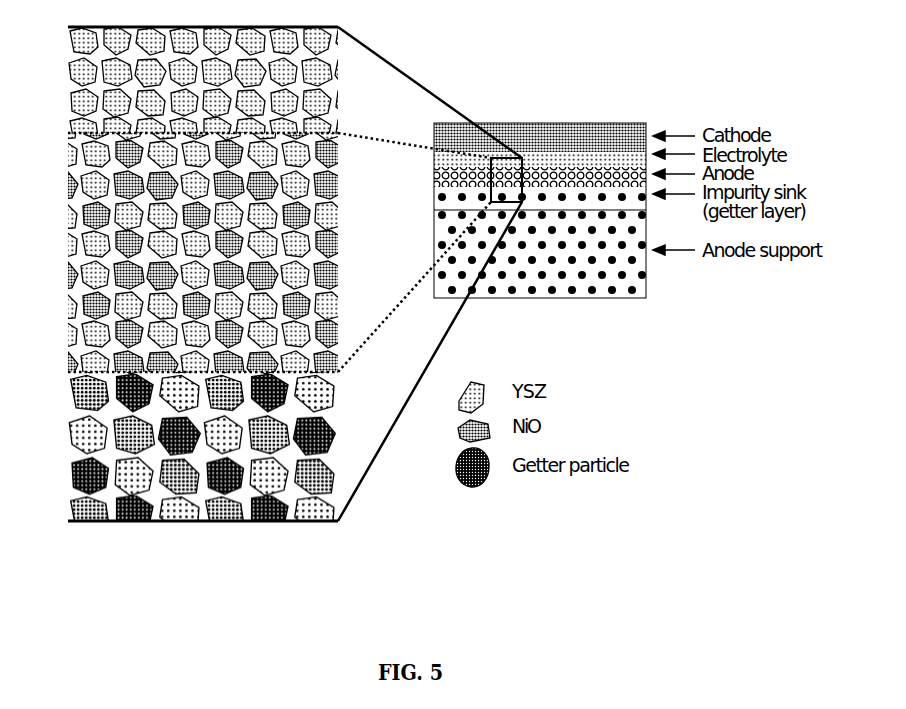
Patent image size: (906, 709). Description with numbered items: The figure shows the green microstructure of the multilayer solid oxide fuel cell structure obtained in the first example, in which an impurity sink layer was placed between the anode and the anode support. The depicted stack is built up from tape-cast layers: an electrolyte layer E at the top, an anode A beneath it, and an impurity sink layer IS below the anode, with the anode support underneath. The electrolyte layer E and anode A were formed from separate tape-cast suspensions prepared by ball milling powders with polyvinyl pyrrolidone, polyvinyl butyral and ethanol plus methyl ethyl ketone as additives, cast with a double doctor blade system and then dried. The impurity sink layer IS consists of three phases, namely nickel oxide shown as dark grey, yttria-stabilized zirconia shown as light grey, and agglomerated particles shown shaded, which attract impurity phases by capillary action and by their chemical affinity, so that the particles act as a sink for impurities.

The electrolyte layer E is at (180, 80).
The anode A is at (179, 252).
The impurity sink layer IS is at (187, 446).